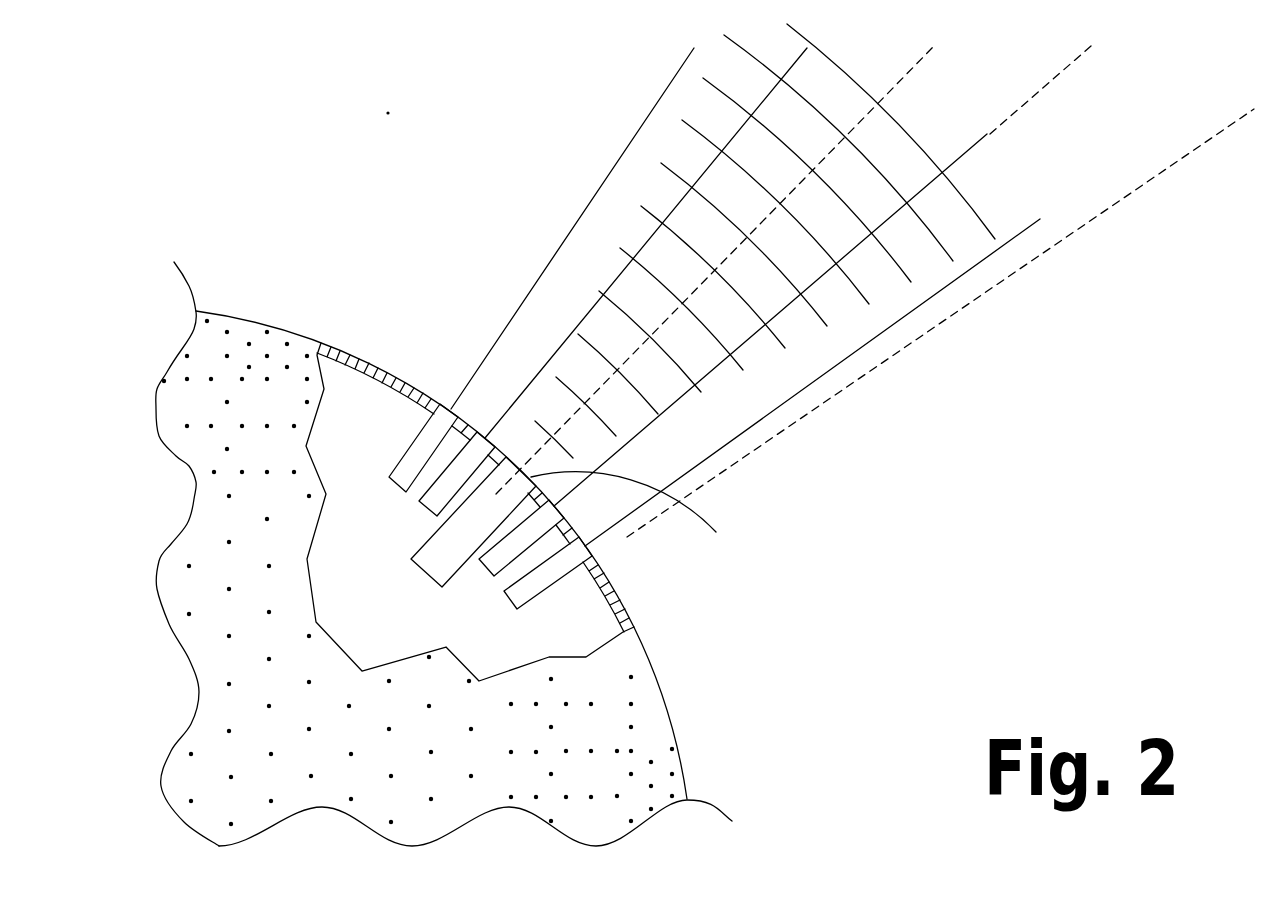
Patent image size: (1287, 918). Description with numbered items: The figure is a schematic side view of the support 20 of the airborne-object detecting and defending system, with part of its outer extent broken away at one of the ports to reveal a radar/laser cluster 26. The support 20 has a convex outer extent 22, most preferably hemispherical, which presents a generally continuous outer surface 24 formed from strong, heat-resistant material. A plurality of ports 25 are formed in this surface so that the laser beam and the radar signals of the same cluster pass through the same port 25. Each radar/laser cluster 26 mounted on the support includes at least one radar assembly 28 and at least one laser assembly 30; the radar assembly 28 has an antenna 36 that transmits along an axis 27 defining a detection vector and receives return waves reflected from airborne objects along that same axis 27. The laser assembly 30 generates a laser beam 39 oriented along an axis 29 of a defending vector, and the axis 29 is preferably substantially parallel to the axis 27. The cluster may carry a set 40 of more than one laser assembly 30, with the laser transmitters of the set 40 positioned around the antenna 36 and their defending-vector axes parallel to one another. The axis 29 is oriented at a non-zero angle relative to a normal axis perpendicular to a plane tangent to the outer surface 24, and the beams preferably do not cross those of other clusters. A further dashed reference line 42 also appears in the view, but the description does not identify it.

The support 20 is at (210, 357).
The convex outer extent 22 is at (310, 337).
The outer surface 24 is at (282, 327).
The port 25 is at (452, 408).
The radar/laser cluster 26 is at (404, 577).
The axis of detection vector 27 is at (905, 85).
The radar assembly 28 is at (415, 590).
The axis of defending vector 29 is at (1043, 90).
The laser assembly 30 is at (404, 515).
The antenna 36 is at (650, 519).
The laser beam 39 is at (857, 248).
The set of laser assemblies 40 is at (389, 448).
The reference axis 42 is at (1013, 272).